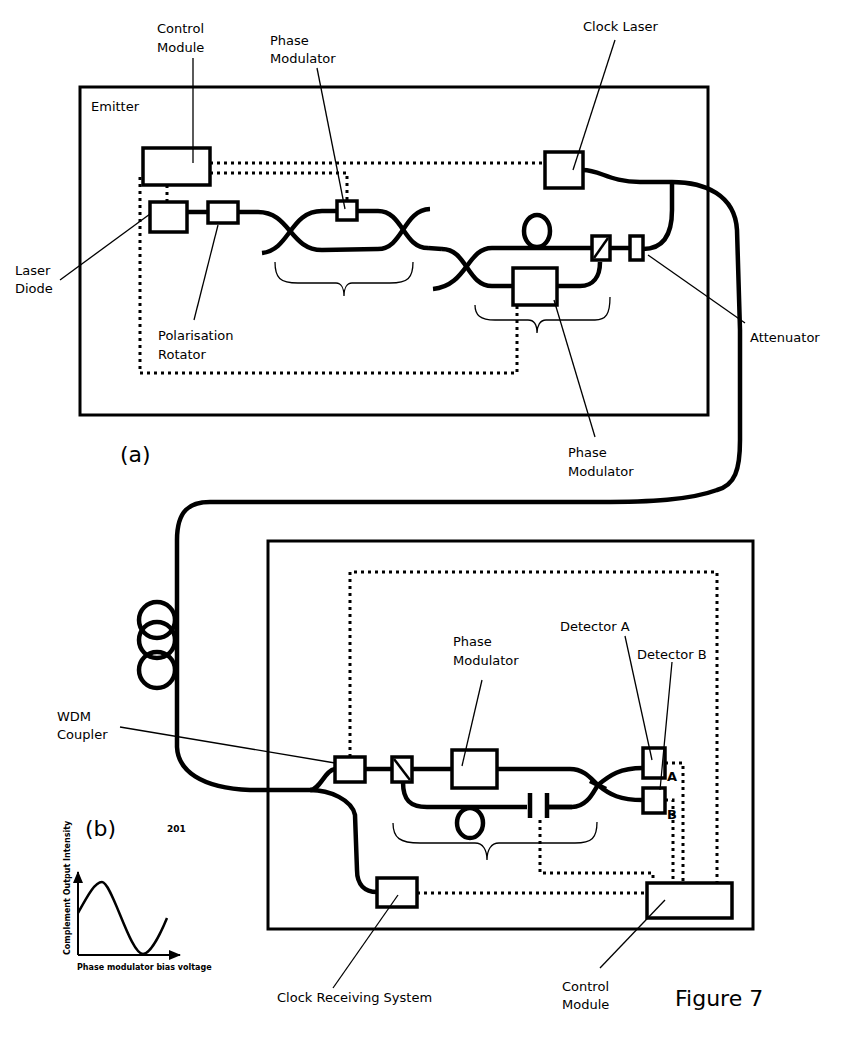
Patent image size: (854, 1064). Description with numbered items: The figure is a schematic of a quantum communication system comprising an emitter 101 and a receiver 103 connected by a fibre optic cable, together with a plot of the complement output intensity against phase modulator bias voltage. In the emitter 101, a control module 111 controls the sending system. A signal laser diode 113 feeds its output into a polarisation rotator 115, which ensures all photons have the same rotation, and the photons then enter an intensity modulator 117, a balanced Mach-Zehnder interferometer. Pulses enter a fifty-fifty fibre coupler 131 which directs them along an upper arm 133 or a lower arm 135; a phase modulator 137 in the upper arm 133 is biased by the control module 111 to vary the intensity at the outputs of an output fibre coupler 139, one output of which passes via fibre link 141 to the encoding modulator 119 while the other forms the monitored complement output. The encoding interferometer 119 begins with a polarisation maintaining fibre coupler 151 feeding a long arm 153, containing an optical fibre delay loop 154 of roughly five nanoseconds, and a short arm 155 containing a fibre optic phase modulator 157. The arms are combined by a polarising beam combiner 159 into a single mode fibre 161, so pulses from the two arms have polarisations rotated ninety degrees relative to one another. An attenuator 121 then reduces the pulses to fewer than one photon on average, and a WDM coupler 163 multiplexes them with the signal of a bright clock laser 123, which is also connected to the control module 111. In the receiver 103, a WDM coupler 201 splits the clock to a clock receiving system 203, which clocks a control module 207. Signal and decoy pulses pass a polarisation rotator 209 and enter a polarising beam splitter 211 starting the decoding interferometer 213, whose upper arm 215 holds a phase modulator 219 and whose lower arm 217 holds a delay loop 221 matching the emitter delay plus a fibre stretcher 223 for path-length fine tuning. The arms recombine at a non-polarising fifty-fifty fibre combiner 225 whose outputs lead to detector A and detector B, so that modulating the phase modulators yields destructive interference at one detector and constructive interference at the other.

In FIG. 7A, the emitter 101 is at (428, 412).
In FIG. 7A, the control module 111 is at (172, 165).
In FIG. 7A, the signal laser diode 113 is at (167, 236).
In FIG. 7A, the polarisation rotator 115 is at (223, 228).
In FIG. 7A, the intensity modulator 117 is at (344, 299).
In FIG. 7A, the encoding modulator 119 is at (542, 328).
In FIG. 7A, the attenuator 121 is at (646, 262).
In FIG. 7A, the bright clock laser 123 is at (561, 153).
In FIG. 7A, the fibre coupler 131 is at (290, 222).
In FIG. 7A, the upper arm 133 is at (374, 203).
In FIG. 7A, the lower arm 135 is at (336, 260).
In FIG. 7A, the phase modulator 137 is at (355, 199).
In FIG. 7A, the output fibre coupler 139 is at (404, 216).
In FIG. 7A, the fibre link 141 is at (439, 244).
In FIG. 7A, the polarisation maintaining fibre coupler 151 is at (466, 276).
In FIG. 7A, the long arm 153 is at (580, 243).
In FIG. 7A, the optical fibre delay loop 154 is at (521, 224).
In FIG. 7A, the short arm 155 is at (569, 287).
In FIG. 7A, the fibre optic phase modulator 157 is at (511, 301).
In FIG. 7A, the polarising beam combiner 159 is at (613, 263).
In FIG. 7A, the single mode fibre 161 is at (669, 237).
In FIG. 7A, the WDM coupler 163 is at (672, 181).
In FIG. 7B, the receiver 103 is at (267, 855).
In FIG. 7B, the WDM coupler 201 is at (334, 756).
In FIG. 7B, the clock receiving system 203 is at (374, 893).
In FIG. 7B, the control module 207 is at (644, 903).
In FIG. 7B, the polarisation rotator 209 is at (360, 754).
In FIG. 7B, the polarising beam splitter 211 is at (415, 751).
In FIG. 7B, the decoding interferometer 213 is at (495, 856).
In FIG. 7B, the upper arm 215 is at (540, 766).
In FIG. 7B, the lower arm 217 is at (503, 812).
In FIG. 7B, the phase modulator 219 is at (489, 746).
In FIG. 7B, the delay loop 221 is at (452, 825).
In FIG. 7B, the fibre stretcher 223 is at (552, 813).
In FIG. 7B, the fibre combiner 225 is at (604, 779).